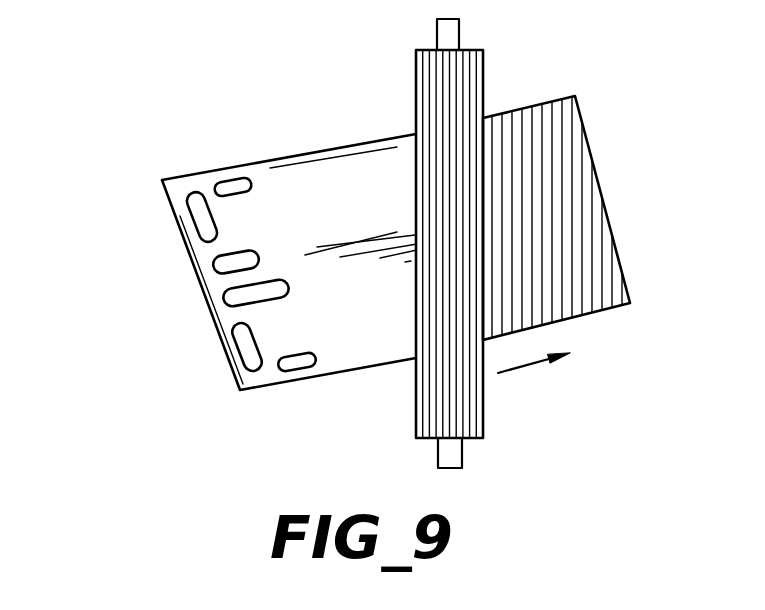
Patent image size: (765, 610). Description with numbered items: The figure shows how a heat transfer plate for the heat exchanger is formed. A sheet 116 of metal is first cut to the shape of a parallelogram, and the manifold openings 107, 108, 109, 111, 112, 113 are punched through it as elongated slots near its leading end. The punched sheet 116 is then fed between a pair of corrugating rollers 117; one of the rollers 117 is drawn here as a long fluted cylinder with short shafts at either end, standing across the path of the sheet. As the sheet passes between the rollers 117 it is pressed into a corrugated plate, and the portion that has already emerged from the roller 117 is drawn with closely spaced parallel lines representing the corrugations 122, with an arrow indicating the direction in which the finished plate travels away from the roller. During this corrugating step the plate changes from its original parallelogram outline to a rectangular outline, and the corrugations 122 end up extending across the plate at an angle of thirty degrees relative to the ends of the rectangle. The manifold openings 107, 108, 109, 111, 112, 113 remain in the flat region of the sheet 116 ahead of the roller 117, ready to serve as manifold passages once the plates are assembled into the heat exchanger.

The manifold opening 107 is at (250, 347).
The manifold opening 108 is at (226, 304).
The manifold opening 109 is at (304, 362).
The manifold opening 111 is at (192, 212).
The manifold opening 112 is at (218, 263).
The manifold opening 113 is at (233, 183).
The sheet 116 is at (352, 192).
The corrugating roller 117 is at (415, 92).
The corrugations 122 is at (565, 282).